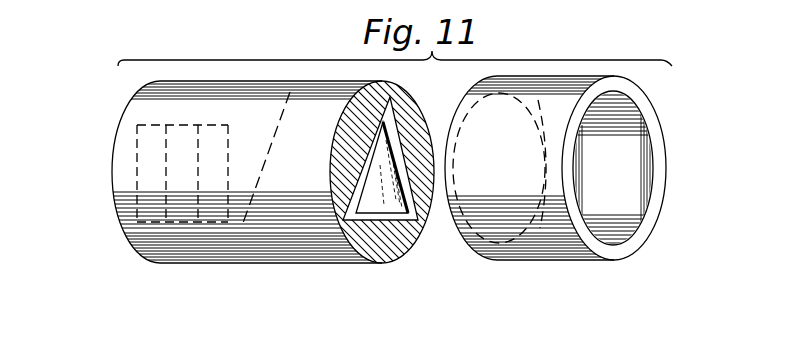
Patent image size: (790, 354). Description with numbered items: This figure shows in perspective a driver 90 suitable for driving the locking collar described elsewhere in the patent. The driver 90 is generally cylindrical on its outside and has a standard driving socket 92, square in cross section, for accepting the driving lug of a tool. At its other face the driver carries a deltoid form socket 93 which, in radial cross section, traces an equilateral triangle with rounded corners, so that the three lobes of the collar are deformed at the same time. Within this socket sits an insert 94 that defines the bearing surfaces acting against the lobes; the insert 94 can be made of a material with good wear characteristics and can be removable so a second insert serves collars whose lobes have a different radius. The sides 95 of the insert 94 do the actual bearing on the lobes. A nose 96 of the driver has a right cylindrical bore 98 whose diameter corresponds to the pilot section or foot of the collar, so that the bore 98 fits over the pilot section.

The driver 90 is at (519, 276).
The driving socket 92 is at (157, 188).
The deltoid form socket 93 is at (409, 217).
The insert 94 is at (400, 156).
The sides of insert 95 is at (372, 160).
The nose 96 is at (613, 255).
The right cylindrical bore 98 is at (636, 180).